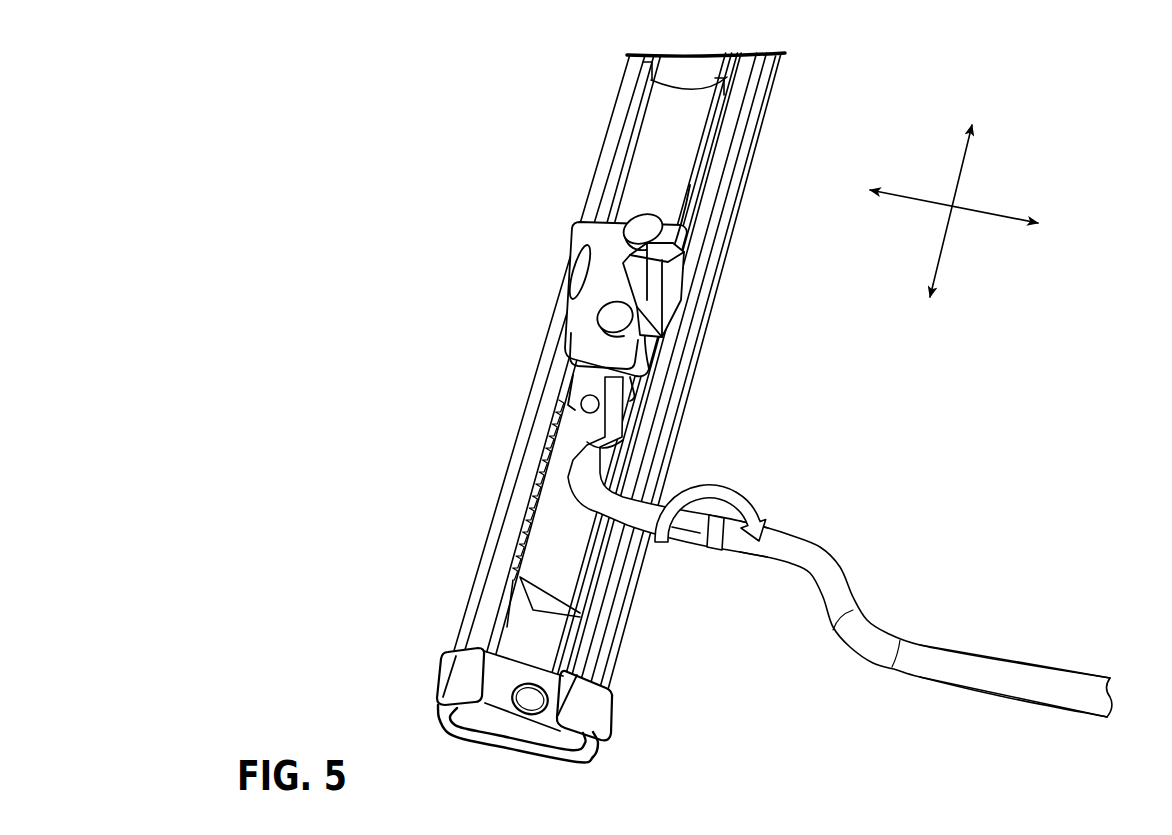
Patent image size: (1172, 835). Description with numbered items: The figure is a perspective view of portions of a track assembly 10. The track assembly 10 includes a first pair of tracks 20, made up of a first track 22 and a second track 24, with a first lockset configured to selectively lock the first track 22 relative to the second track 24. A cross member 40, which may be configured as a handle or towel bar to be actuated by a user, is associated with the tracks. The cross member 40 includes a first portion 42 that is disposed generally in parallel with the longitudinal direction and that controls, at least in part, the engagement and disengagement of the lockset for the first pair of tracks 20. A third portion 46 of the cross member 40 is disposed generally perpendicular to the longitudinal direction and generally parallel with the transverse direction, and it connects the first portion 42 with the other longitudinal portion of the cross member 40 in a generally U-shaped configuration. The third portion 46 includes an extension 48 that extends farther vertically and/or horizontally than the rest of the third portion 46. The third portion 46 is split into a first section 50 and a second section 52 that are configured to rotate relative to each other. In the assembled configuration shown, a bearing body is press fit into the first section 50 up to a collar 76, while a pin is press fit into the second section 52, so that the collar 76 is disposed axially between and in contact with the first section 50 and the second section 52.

The track assembly 10 is at (1087, 253).
The first pair of tracks 20 is at (535, 222).
The first track 22 is at (710, 63).
The second track 24 is at (707, 323).
The cross member 40 is at (940, 527).
The first portion 42 is at (608, 411).
The third portion 46 is at (798, 656).
The extension 48 is at (987, 660).
The first section 50 is at (683, 537).
The second section 52 is at (787, 540).
The collar 76 is at (713, 547).